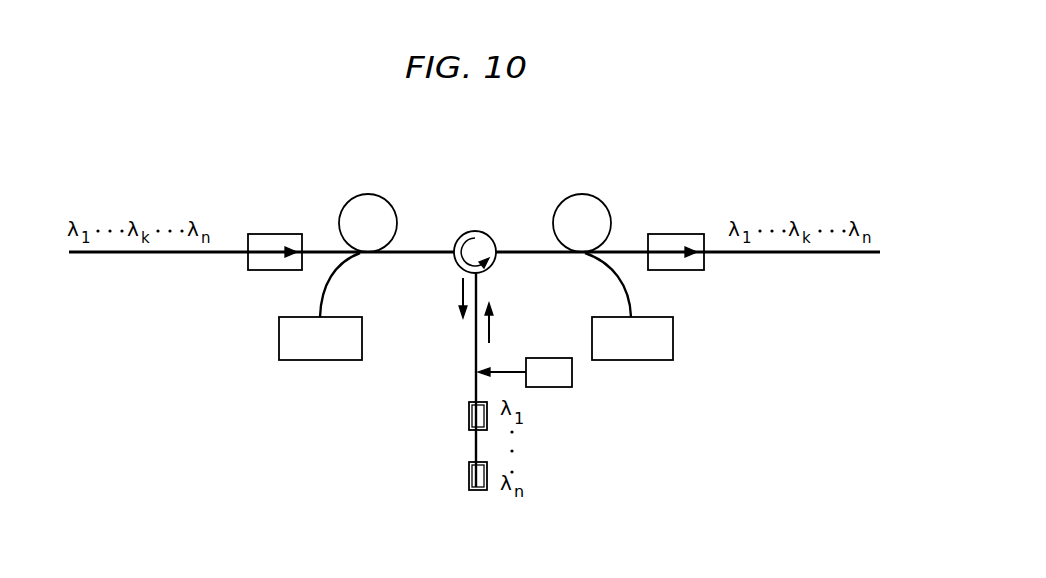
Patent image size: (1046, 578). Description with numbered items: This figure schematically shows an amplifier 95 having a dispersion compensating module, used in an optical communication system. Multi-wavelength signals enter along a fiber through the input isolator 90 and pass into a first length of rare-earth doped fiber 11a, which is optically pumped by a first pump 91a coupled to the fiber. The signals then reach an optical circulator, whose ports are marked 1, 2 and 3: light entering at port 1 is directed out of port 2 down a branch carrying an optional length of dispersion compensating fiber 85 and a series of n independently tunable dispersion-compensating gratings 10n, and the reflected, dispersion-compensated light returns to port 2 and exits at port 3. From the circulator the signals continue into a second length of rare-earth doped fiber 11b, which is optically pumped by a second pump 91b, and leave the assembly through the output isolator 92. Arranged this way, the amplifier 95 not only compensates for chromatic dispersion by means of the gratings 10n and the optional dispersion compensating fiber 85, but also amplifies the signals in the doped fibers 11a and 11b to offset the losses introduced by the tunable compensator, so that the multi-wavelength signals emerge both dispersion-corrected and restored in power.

The input isolator 90 is at (267, 234).
The output isolator 92 is at (685, 234).
The first length of rare-earth doped fiber 11a is at (383, 193).
The second length of rare-earth doped fiber 11b is at (568, 193).
The first pump 91a is at (278, 340).
The second pump 91b is at (675, 332).
The dispersion compensating fiber 85 is at (545, 358).
The independently tunable dispersion-compensating gratings 10n is at (450, 446).
The amplifier 95 is at (305, 413).
The circulator port 1 is at (446, 239).
The circulator port 2 is at (489, 289).
The circulator port 3 is at (507, 239).